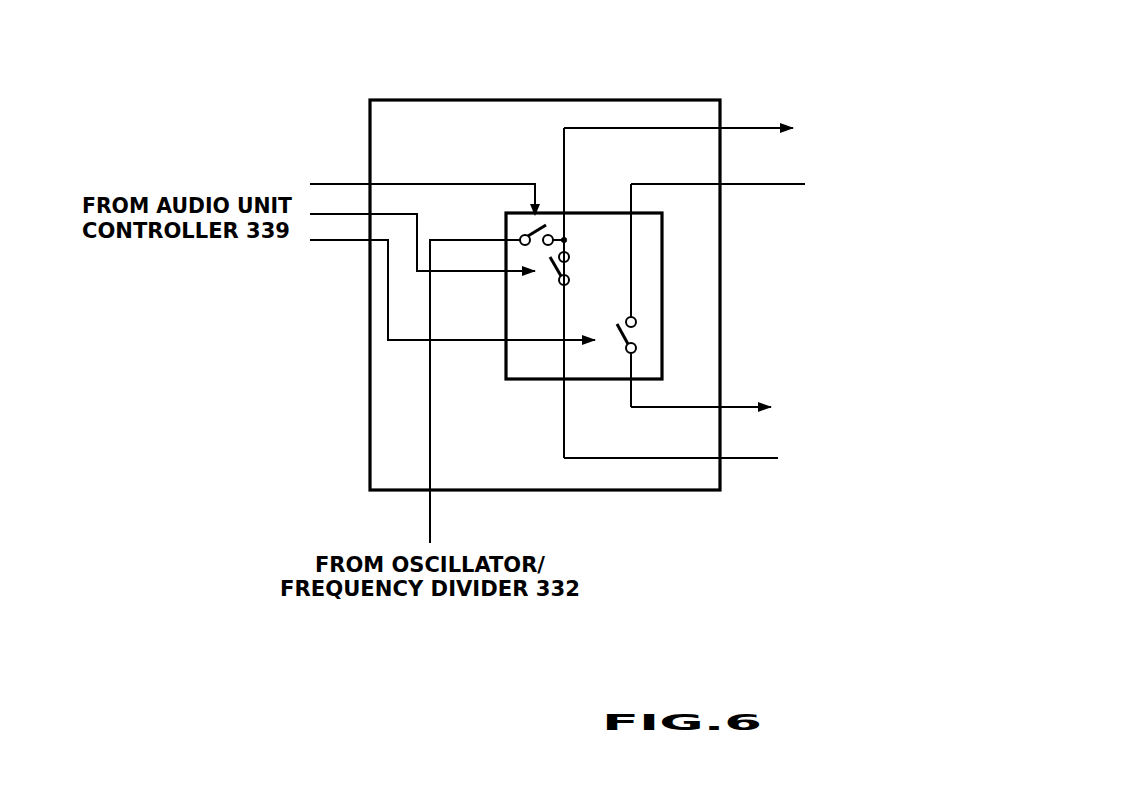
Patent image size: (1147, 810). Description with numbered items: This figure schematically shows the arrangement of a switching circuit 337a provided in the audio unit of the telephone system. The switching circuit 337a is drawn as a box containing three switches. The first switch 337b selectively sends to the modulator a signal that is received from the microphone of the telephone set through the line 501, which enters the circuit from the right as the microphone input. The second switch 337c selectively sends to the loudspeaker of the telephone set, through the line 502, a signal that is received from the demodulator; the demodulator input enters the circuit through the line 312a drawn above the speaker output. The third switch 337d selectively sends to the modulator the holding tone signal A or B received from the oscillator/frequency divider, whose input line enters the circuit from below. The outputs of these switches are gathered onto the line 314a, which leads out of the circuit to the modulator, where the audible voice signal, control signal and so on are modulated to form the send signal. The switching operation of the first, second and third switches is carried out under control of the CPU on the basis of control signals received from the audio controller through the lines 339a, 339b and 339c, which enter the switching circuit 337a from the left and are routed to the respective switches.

The switching circuit 337a is at (558, 100).
The first switch 337b is at (545, 283).
The second switch 337c is at (640, 338).
The third switch 337d is at (528, 217).
The line 339a is at (356, 184).
The line 339b is at (338, 214).
The line 339c is at (340, 240).
The line 314a is at (752, 128).
The input line from demodulator 312a is at (775, 184).
The line 502 is at (748, 407).
The line 501 is at (750, 458).